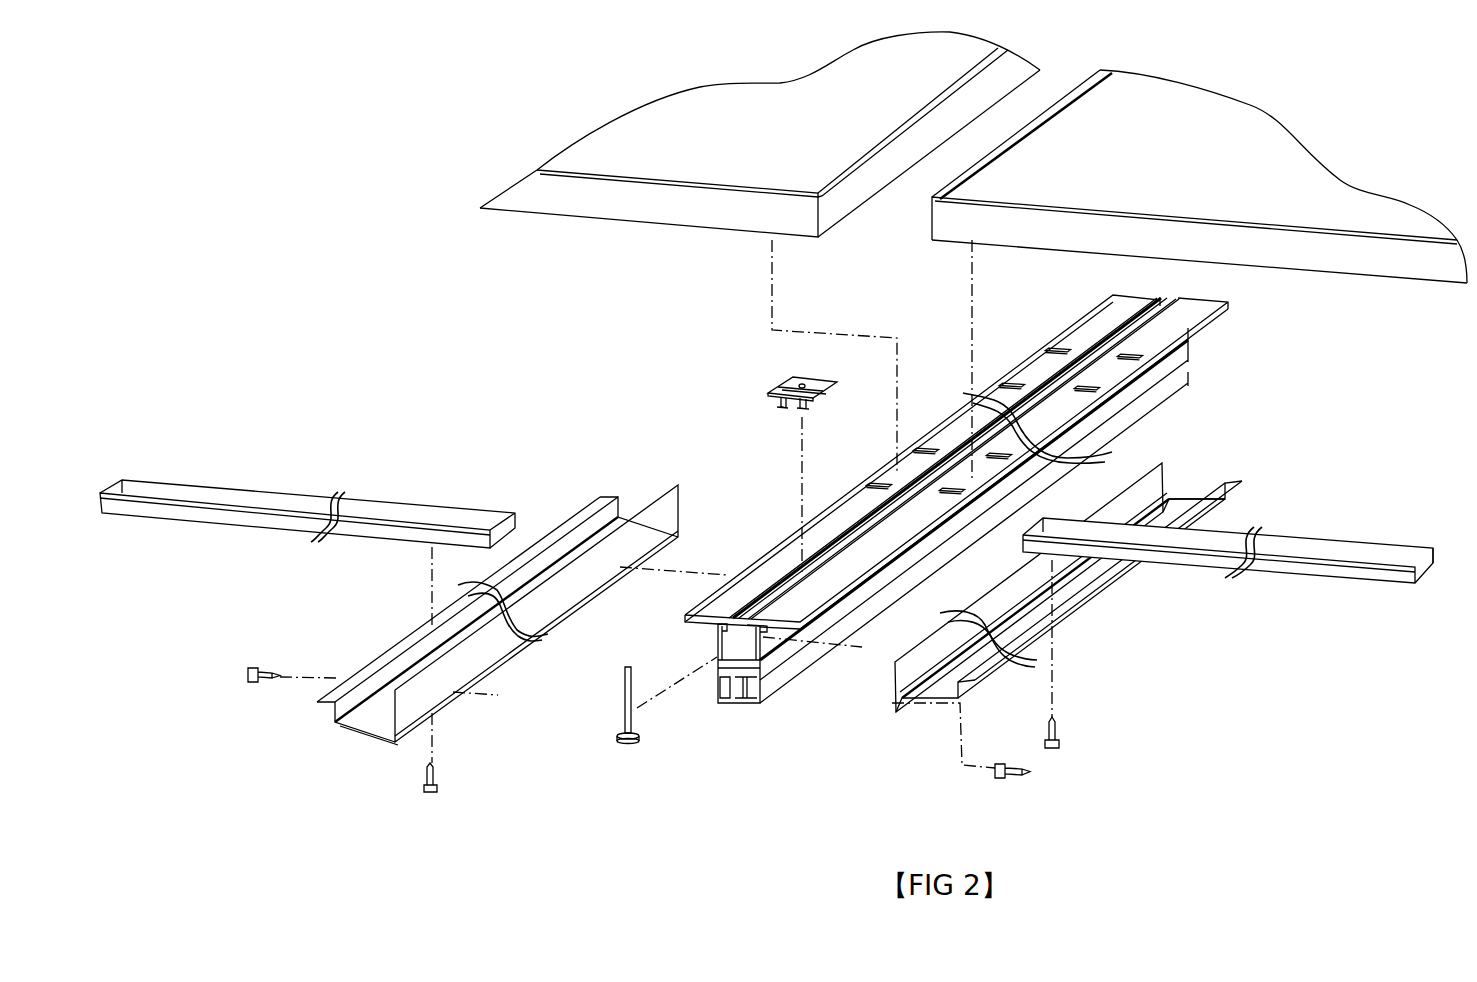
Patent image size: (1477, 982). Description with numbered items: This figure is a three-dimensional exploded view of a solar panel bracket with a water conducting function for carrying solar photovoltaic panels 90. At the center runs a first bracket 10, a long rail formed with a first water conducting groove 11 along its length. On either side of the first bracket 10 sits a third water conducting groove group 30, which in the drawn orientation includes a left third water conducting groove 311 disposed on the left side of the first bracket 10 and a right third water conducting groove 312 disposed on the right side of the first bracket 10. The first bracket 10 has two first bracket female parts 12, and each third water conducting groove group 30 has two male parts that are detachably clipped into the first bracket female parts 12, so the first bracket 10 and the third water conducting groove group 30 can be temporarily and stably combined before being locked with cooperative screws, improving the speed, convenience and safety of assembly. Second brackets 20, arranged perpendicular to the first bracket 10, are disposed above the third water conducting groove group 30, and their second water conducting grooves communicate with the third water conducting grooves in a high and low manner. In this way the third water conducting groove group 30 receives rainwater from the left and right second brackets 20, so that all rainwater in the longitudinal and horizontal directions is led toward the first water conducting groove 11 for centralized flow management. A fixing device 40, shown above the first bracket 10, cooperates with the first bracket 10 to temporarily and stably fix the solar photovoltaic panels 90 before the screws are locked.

The first bracket 10 is at (925, 526).
The first water conducting groove 11 is at (743, 650).
The first bracket female part 12 is at (717, 641).
The second bracket 20 is at (767, 535).
The third water conducting groove group 30 is at (782, 601).
The left third water conducting groove 311 is at (1175, 508).
The right third water conducting groove 312 is at (377, 713).
The fixing device 40 is at (776, 381).
The solar photovoltaic panel 90 is at (1237, 133).